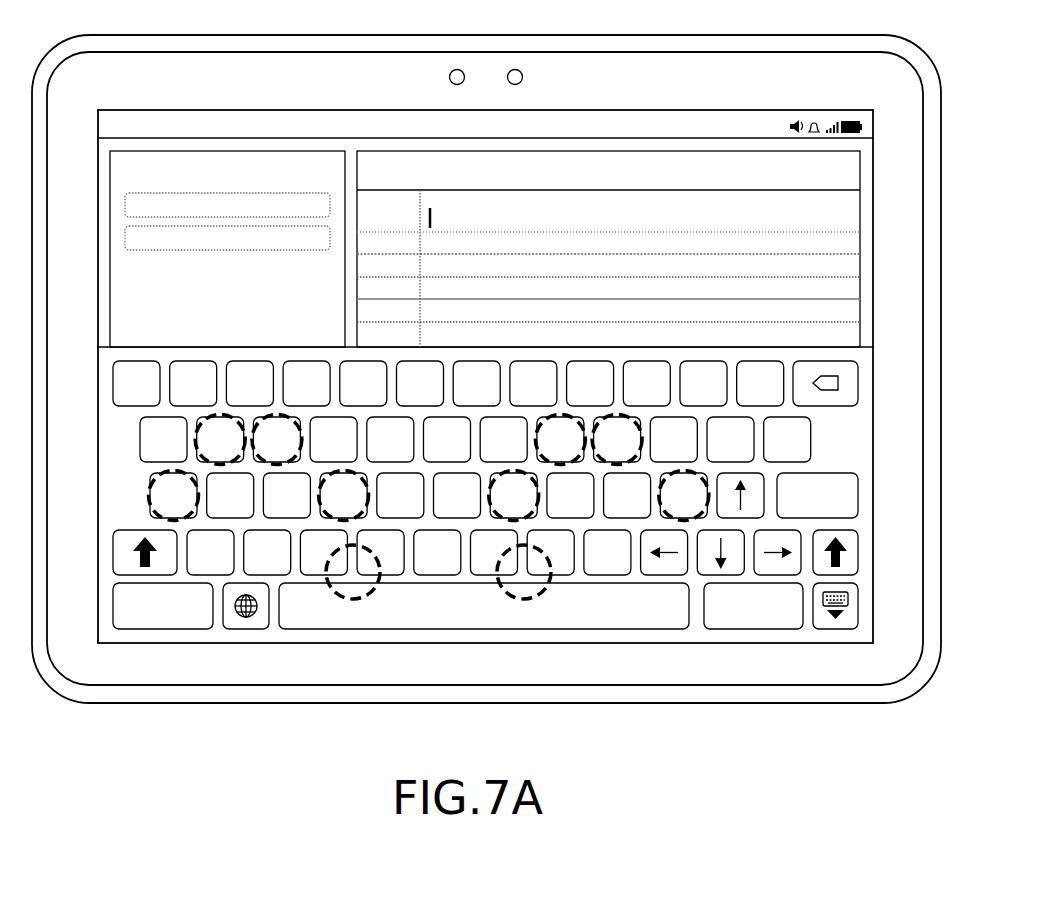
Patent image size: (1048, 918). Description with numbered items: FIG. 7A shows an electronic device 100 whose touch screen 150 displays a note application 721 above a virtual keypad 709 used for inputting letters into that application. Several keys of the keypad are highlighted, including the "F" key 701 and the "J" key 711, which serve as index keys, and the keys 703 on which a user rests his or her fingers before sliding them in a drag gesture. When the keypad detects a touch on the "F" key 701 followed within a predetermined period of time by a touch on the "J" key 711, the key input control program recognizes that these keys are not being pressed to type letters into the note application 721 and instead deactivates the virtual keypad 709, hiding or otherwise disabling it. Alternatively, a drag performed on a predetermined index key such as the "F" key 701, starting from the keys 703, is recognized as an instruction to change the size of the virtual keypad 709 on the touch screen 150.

The electronic device 100 is at (941, 110).
The touch screen 150 is at (554, 376).
The note application 721 is at (808, 245).
The virtual keypad 709 is at (838, 442).
The keys 703 is at (277, 466).
The "F" key 701 is at (365, 511).
The "J" key 711 is at (492, 517).